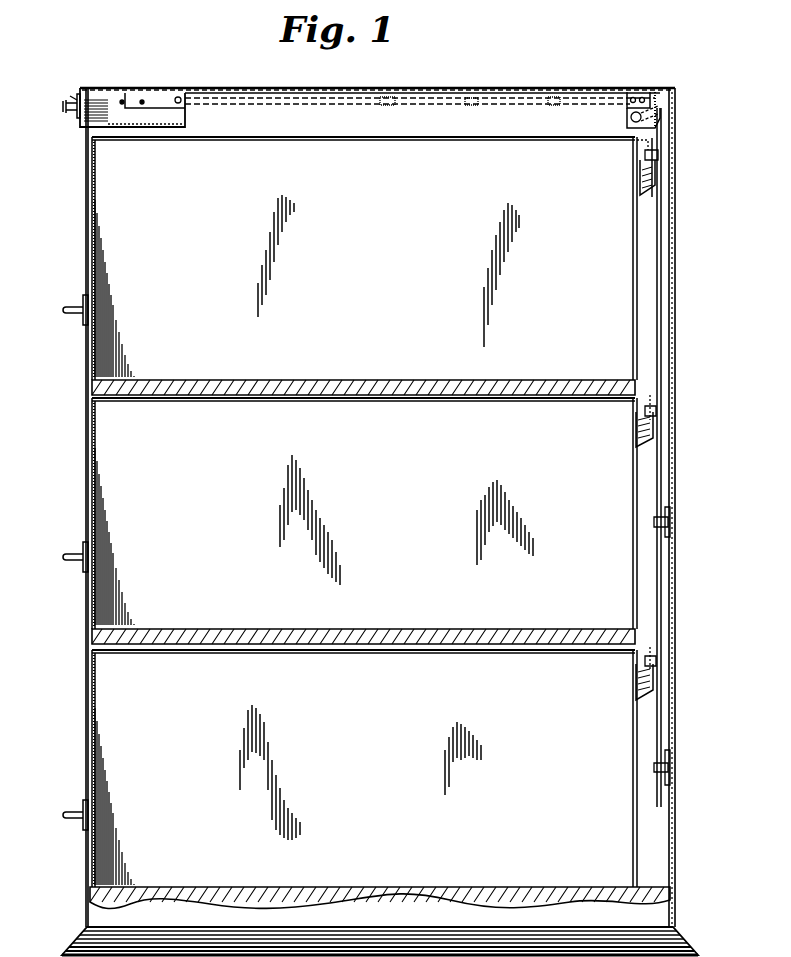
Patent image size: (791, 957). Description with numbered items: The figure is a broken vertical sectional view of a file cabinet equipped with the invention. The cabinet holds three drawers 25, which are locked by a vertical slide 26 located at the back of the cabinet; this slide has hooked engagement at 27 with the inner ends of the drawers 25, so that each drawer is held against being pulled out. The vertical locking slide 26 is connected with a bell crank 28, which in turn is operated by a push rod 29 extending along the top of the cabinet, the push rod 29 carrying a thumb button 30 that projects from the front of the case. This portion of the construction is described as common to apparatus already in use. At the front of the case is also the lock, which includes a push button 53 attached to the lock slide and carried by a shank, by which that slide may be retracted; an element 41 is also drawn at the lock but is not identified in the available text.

The drawers 25 is at (90, 222).
The slide 26 is at (661, 590).
The hooked engagement 27 is at (658, 154).
The bell crank 28 is at (632, 123).
The push rod 29 is at (400, 100).
The thumb button 30 is at (64, 106).
The lock plate 41 is at (77, 97).
The push button 53 is at (76, 118).